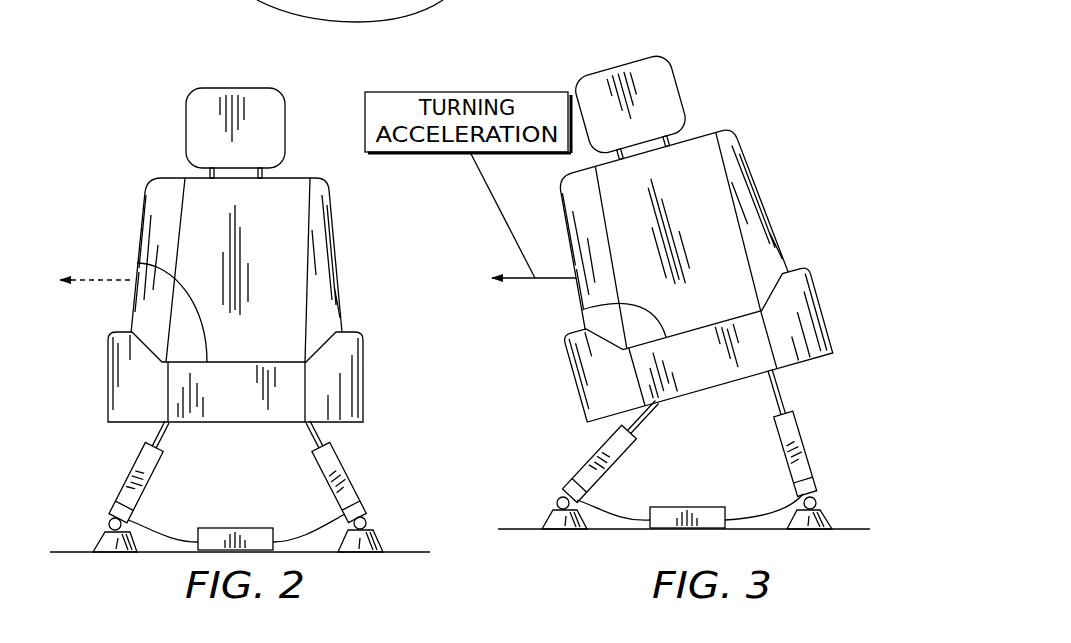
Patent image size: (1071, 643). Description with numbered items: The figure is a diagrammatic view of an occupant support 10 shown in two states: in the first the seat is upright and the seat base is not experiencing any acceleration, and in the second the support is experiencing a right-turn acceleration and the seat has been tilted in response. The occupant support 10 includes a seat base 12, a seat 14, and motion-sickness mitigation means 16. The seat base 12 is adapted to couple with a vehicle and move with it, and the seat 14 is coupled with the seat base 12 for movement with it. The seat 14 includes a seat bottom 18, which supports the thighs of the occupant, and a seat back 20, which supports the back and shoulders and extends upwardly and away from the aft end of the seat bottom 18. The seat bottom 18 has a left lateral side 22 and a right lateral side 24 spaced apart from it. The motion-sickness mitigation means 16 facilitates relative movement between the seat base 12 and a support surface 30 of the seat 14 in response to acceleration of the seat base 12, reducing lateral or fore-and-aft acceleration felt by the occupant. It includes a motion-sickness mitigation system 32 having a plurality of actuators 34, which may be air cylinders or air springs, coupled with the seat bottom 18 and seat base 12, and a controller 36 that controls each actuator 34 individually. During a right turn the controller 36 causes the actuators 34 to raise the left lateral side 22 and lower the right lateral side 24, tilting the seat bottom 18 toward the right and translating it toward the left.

In FIG. 2, the occupant support 10 is at (143, 93).
In FIG. 3, the occupant support 10 is at (767, 87).
In FIG. 2, the seat base 12 is at (380, 542).
In FIG. 3, the seat base 12 is at (830, 517).
In FIG. 2, the seat 14 is at (358, 270).
In FIG. 3, the seat 14 is at (780, 245).
In FIG. 2, the motion-sickness mitigation means 16 is at (350, 477).
In FIG. 3, the motion-sickness mitigation means 16 is at (810, 443).
In FIG. 2, the seat bottom 18 is at (380, 360).
In FIG. 3, the seat bottom 18 is at (830, 320).
In FIG. 2, the seat back 20 is at (335, 222).
In FIG. 3, the seat back 20 is at (747, 160).
In FIG. 2, the left lateral side 22 is at (367, 397).
In FIG. 3, the left lateral side 22 is at (822, 287).
In FIG. 2, the right lateral side 24 is at (102, 377).
In FIG. 3, the right lateral side 24 is at (567, 334).
In FIG. 2, the support surface 30 is at (137, 263).
In FIG. 3, the support surface 30 is at (581, 310).
In FIG. 2, the motion-sickness mitigation system 32 is at (217, 497).
In FIG. 3, the motion-sickness mitigation system 32 is at (683, 480).
In FIG. 2, the actuators 34 is at (122, 481).
In FIG. 3, the actuators 34 is at (580, 462).
In FIG. 2, the controller 36 is at (230, 527).
In FIG. 3, the controller 36 is at (690, 503).